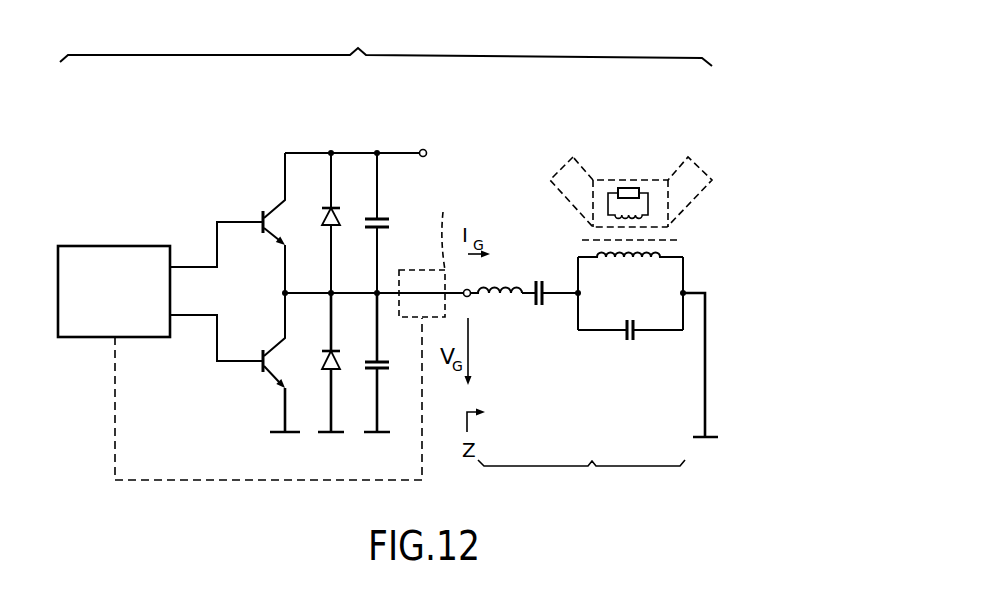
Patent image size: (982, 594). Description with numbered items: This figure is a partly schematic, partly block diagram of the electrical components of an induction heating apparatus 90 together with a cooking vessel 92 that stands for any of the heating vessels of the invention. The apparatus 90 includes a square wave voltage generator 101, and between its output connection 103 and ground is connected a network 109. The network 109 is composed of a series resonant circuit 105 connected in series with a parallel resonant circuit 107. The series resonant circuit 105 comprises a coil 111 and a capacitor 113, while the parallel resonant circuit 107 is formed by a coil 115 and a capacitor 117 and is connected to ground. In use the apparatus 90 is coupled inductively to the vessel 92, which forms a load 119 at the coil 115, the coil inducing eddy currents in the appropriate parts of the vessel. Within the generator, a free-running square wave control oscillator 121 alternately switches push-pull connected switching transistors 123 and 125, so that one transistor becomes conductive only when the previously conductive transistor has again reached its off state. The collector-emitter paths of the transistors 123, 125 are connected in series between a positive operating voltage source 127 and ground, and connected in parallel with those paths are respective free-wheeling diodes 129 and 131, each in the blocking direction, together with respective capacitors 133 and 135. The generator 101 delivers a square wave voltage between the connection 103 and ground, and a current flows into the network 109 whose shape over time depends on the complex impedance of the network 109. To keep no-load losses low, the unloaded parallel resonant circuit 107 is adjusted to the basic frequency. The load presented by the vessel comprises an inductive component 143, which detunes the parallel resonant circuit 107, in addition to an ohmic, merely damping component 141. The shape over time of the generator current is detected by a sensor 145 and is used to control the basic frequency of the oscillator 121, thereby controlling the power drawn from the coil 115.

The induction heating apparatus 90 is at (386, 41).
The cooking vessel 92 is at (632, 155).
The square wave voltage generator 101 is at (150, 192).
The output connection 103 is at (467, 277).
The series resonant circuit 105 is at (508, 318).
The parallel resonant circuit 107 is at (646, 352).
The network 109 is at (602, 366).
The coil 111 is at (494, 291).
The capacitor 113 is at (545, 289).
The coil 115 is at (662, 256).
The capacitor 117 is at (624, 338).
The load 119 is at (652, 180).
The square wave control oscillator 121 is at (112, 254).
The switching transistor 123 is at (261, 212).
The switching transistor 125 is at (262, 350).
The positive operating voltage source 127 is at (426, 150).
The free-wheeling diode 129 is at (324, 210).
The free-wheeling diode 131 is at (321, 357).
The capacitor 133 is at (384, 216).
The capacitor 135 is at (382, 358).
The ohmic damping component 141 is at (626, 187).
The inductive component 143 is at (611, 212).
The sensor 145 is at (428, 244).